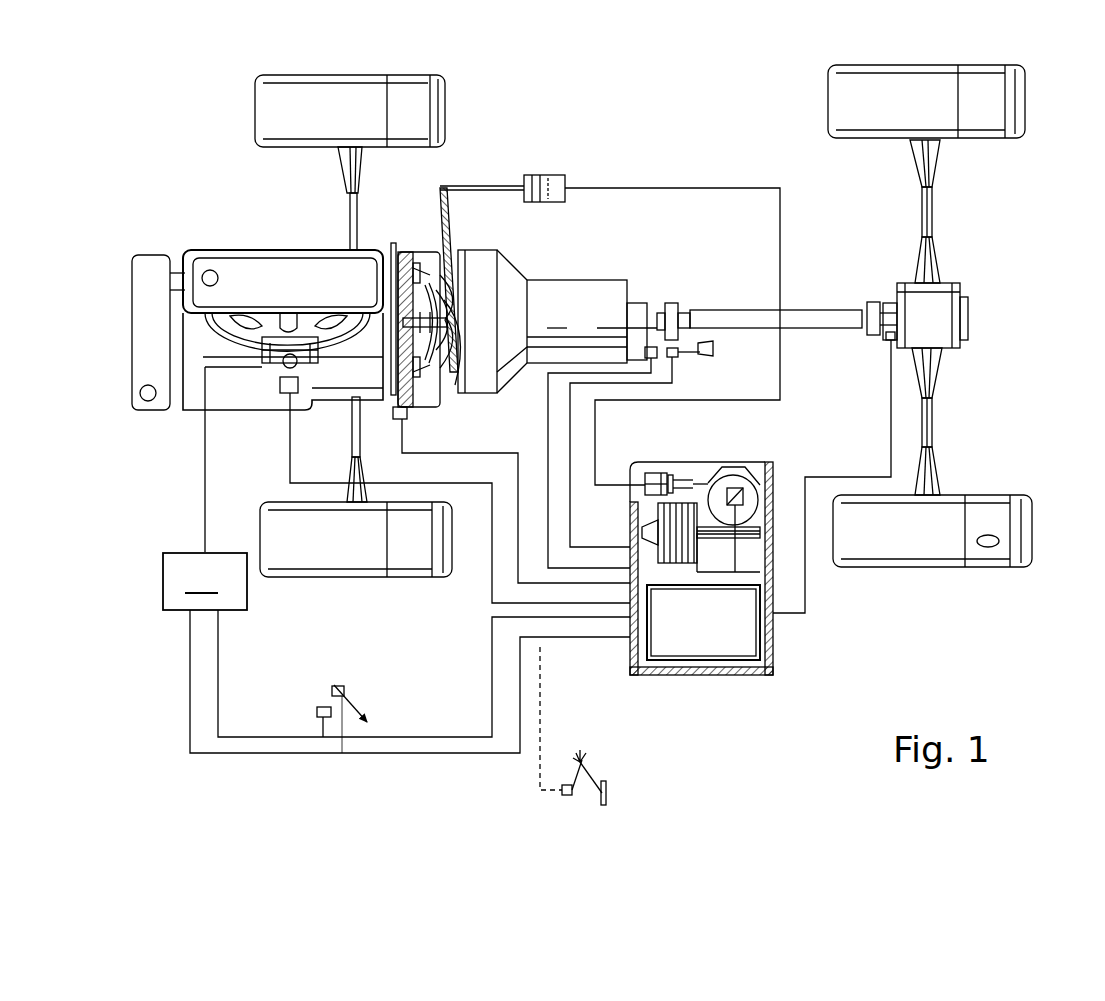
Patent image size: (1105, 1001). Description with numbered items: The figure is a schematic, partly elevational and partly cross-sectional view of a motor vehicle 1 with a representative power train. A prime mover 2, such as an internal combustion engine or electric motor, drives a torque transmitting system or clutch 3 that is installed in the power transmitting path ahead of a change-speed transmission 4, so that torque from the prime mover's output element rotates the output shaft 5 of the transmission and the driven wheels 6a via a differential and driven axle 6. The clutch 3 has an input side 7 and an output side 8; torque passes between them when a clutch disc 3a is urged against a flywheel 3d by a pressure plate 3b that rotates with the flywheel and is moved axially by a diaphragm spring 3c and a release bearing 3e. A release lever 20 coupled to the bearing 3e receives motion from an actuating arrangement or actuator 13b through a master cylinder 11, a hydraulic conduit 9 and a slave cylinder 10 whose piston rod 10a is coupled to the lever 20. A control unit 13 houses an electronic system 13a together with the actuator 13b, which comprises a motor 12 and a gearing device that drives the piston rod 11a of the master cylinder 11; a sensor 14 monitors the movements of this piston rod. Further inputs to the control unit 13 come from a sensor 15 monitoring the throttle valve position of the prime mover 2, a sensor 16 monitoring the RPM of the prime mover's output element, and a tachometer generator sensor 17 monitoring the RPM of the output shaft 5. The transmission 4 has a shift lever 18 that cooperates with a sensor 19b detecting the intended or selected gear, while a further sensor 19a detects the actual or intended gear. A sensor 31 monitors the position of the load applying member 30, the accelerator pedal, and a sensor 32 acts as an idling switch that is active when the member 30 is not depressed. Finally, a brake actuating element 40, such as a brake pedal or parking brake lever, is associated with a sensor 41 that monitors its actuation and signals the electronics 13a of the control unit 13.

The motor vehicle 1 is at (669, 82).
The prime mover 2 is at (232, 272).
The torque transmitting system 3 is at (414, 249).
The clutch disc 3a is at (438, 378).
The pressure plate 3b is at (427, 263).
The diaphragm spring 3c is at (438, 290).
The flywheel 3d is at (411, 388).
The release bearing 3e is at (480, 347).
The change-speed transmission 4 is at (569, 335).
The output shaft 5 is at (822, 308).
The differential and driven axle 6 is at (930, 427).
The driven wheels 6a is at (995, 105).
The input side 7 is at (391, 252).
The output side 8 is at (463, 258).
The hydraulic conduit 9 is at (621, 187).
The slave cylinder 10 is at (550, 176).
The piston rod 10a is at (487, 185).
The master cylinder 11 is at (661, 473).
The piston rod 11a is at (672, 473).
The motor 12 is at (652, 520).
The control unit 13 is at (632, 655).
The electronic system 13a is at (682, 633).
The actuating arrangement 13b is at (747, 457).
The sensor 14 is at (770, 476).
The sensor 15 is at (285, 393).
The sensor 16 is at (397, 419).
The tachometer generator sensor 17 is at (874, 340).
The shift lever 18 is at (672, 303).
The sensor 19a is at (651, 345).
The sensor 19b is at (680, 357).
The release lever 20 is at (448, 205).
The load applying member 30 is at (336, 681).
The sensor 31 is at (322, 705).
The sensor 32 is at (347, 692).
The brake actuating element 40 is at (609, 793).
The sensor 41 is at (560, 790).